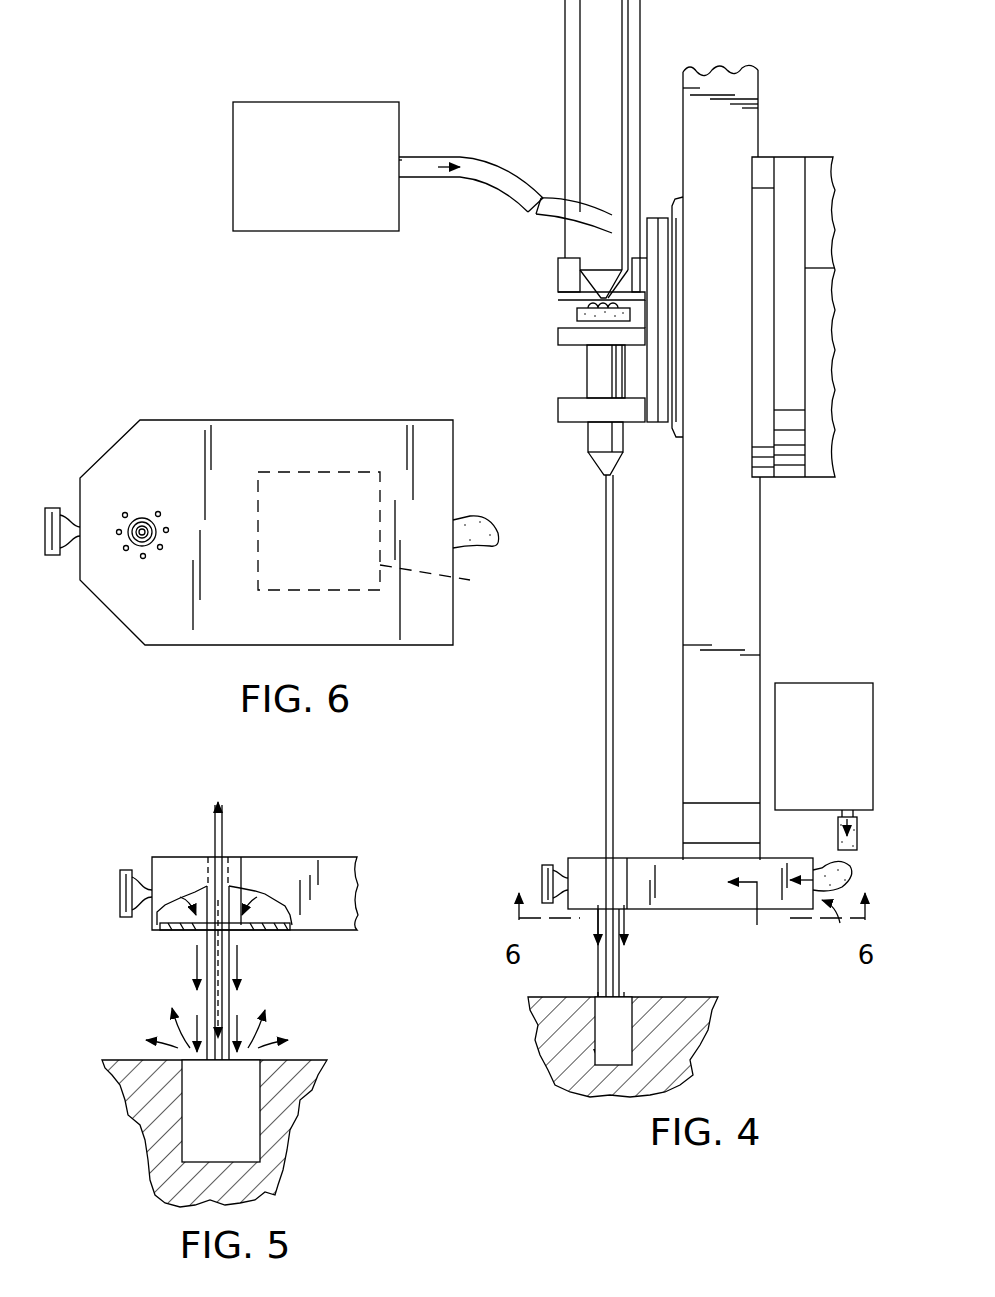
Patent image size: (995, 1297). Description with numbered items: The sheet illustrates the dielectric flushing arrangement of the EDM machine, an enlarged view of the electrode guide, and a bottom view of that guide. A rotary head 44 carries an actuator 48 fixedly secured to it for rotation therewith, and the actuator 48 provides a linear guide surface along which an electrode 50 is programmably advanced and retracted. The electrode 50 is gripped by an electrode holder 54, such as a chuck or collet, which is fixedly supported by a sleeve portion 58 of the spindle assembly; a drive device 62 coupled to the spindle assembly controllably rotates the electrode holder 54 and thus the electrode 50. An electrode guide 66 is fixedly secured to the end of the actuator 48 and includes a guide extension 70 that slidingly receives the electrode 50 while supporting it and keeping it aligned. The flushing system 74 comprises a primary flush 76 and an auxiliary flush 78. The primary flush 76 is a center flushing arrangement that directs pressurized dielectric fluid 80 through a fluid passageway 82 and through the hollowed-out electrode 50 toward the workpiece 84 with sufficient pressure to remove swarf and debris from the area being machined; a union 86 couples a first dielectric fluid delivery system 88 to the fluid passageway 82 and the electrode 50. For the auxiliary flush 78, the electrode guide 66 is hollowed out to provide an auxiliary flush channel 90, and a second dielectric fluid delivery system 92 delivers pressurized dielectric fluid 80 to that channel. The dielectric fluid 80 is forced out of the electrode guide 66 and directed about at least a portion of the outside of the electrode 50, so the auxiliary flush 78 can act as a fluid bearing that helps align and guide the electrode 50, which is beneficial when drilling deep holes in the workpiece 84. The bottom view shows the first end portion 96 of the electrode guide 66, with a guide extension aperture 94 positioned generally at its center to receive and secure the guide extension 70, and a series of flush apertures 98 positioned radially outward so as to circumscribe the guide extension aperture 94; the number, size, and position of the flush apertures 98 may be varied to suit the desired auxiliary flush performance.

In FIG. 4, the rotary head 44 is at (824, 132).
In FIG. 4, the actuator 48 is at (762, 556).
In FIG. 6, the actuator 48 is at (383, 535).
In FIG. 4, the electrode 50 is at (606, 735).
In FIG. 6, the electrode 50 is at (140, 546).
In FIG. 5, the electrode 50 is at (215, 827).
In FIG. 4, the electrode holder 54 is at (590, 446).
In FIG. 4, the sleeve portion 58 is at (584, 378).
In FIG. 4, the drive device 62 is at (565, 57).
In FIG. 4, the electrode guide 66 is at (580, 858).
In FIG. 6, the electrode guide 66 is at (352, 420).
In FIG. 5, the electrode guide 66 is at (333, 857).
In FIG. 4, the guide extension 70 is at (603, 958).
In FIG. 6, the guide extension 70 is at (130, 528).
In FIG. 5, the guide extension 70 is at (210, 955).
In FIG. 4, the flushing system 74 is at (770, 46).
In FIG. 4, the primary flush 76 is at (538, 247).
In FIG. 4, the auxiliary flush 78 is at (830, 842).
In FIG. 4, the dielectric fluid 80 is at (438, 158).
In FIG. 5, the dielectric fluid 80 is at (190, 968).
In FIG. 4, the fluid passageway 82 is at (505, 162).
In FIG. 4, the workpiece 84 is at (545, 1035).
In FIG. 5, the workpiece 84 is at (150, 1140).
In FIG. 4, the union 86 is at (590, 282).
In FIG. 4, the first dielectric fluid delivery system 88 is at (233, 160).
In FIG. 4, the auxiliary flush channel 90 is at (839, 917).
In FIG. 5, the auxiliary flush channel 90 is at (270, 905).
In FIG. 4, the second dielectric fluid delivery system 92 is at (814, 683).
In FIG. 6, the guide extension aperture 94 is at (150, 514).
In FIG. 6, the first end portion 96 is at (98, 432).
In FIG. 6, the flush apertures 98 is at (162, 548).
In FIG. 5, the flush apertures 98 is at (180, 930).